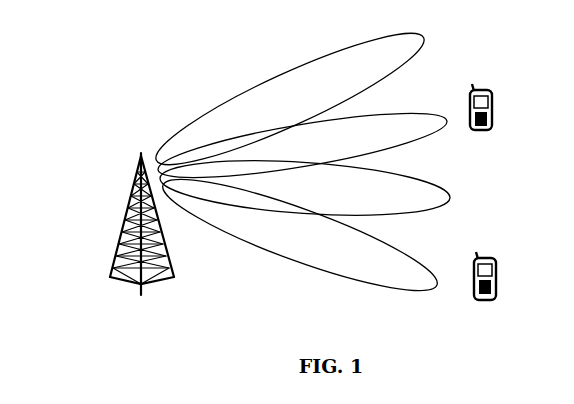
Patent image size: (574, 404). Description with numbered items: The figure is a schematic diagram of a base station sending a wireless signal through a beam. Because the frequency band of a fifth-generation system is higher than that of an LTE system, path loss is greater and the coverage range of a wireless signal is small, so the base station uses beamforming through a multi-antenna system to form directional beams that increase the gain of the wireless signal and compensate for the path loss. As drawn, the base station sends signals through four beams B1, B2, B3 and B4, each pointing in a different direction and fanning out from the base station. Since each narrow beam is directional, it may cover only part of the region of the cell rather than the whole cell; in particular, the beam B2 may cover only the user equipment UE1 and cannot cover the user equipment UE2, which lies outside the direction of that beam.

The beam B1 is at (290, 99).
The beam B2 is at (303, 145).
The beam B3 is at (304, 188).
The beam B4 is at (300, 235).
The UE UE1 is at (510, 107).
The UE UE2 is at (511, 276).